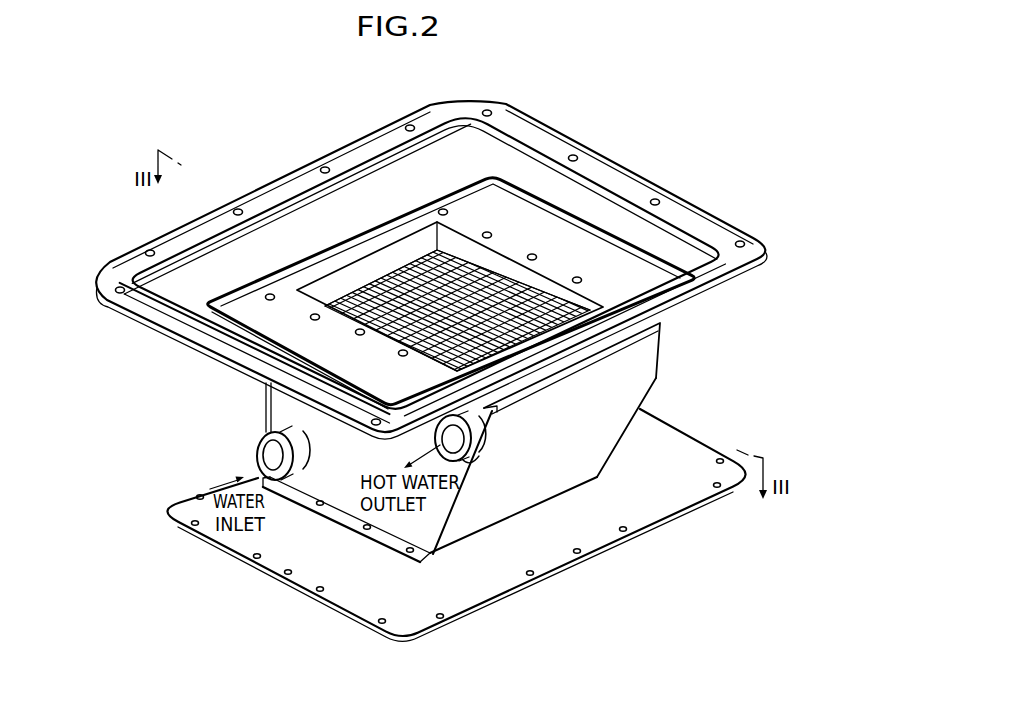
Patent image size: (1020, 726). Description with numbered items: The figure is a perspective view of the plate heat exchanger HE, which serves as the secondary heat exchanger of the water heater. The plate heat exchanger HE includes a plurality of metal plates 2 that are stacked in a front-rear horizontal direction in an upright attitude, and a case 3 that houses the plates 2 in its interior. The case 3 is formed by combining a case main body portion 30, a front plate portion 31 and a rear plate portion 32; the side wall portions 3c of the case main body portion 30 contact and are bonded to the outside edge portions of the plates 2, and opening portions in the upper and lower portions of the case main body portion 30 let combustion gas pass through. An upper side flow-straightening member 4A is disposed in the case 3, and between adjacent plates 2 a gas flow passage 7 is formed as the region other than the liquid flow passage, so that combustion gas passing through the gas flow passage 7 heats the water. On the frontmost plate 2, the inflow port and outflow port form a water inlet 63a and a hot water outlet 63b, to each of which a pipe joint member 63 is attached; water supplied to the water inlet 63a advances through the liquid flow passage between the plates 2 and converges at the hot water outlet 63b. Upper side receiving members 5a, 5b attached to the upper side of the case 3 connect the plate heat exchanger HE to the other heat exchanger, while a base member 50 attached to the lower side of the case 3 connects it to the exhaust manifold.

The plate heat exchanger HE is at (266, 116).
The upper side receiving member 5a is at (617, 177).
The upper side receiving member 5b is at (632, 257).
The upper side flow-straightening member 4A is at (420, 245).
The plates 2 is at (483, 271).
The gas flow passage 7 is at (526, 284).
The case 3 is at (256, 395).
The side wall portion 3c is at (590, 454).
The rear plate portion 32 is at (656, 383).
The case main body portion 30 is at (563, 479).
The front plate portion 31 is at (343, 491).
The pipe joint member 63 is at (258, 434).
The water inlet 63a is at (270, 451).
The hot water outlet 63b is at (466, 467).
The base member 50 is at (343, 594).